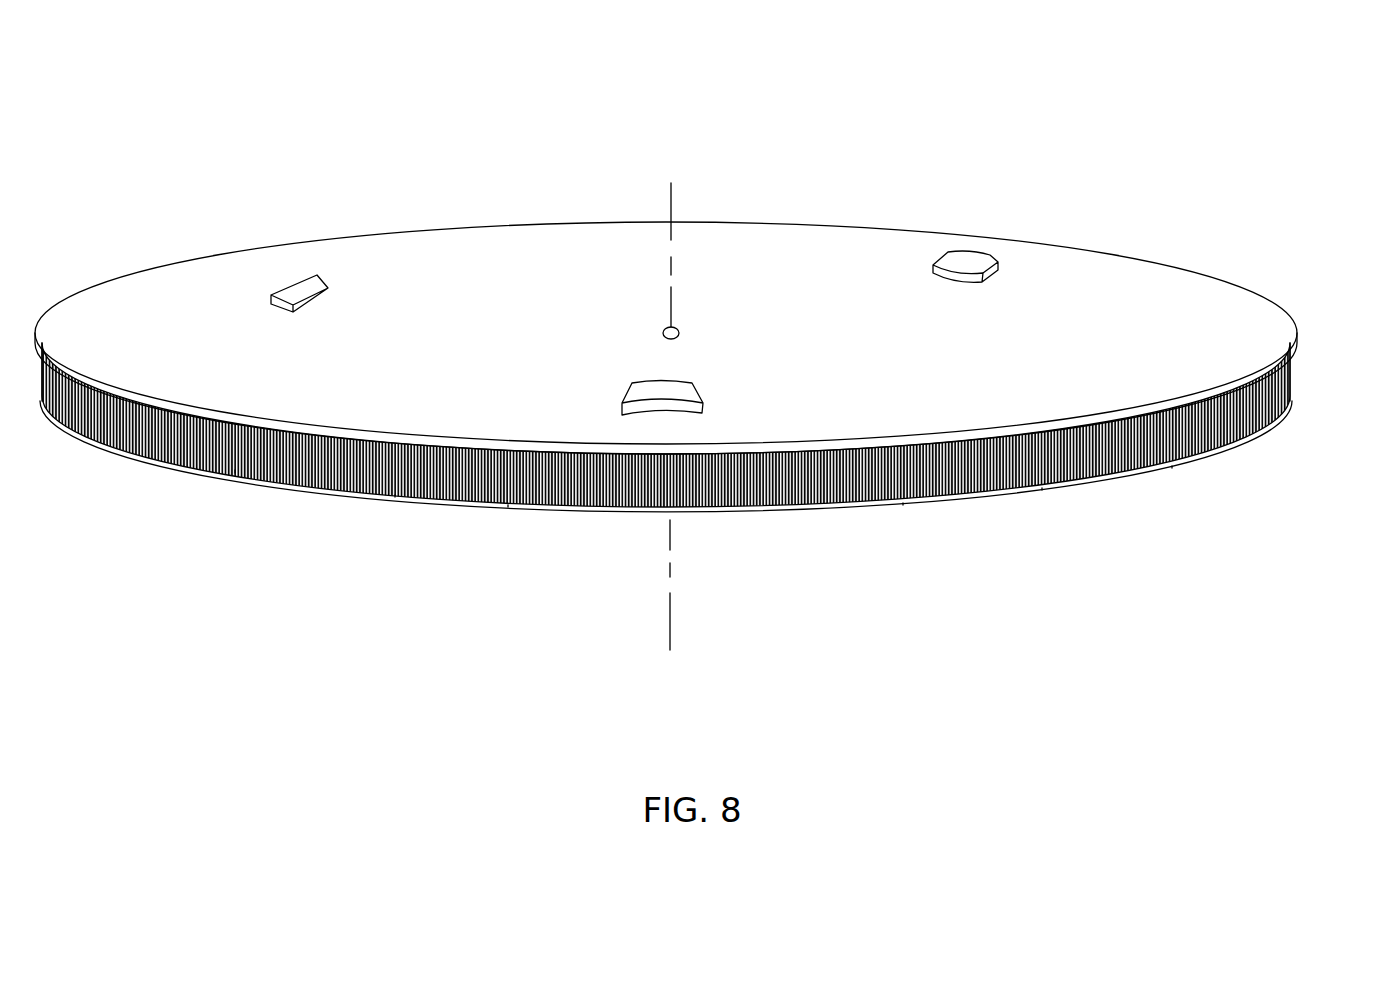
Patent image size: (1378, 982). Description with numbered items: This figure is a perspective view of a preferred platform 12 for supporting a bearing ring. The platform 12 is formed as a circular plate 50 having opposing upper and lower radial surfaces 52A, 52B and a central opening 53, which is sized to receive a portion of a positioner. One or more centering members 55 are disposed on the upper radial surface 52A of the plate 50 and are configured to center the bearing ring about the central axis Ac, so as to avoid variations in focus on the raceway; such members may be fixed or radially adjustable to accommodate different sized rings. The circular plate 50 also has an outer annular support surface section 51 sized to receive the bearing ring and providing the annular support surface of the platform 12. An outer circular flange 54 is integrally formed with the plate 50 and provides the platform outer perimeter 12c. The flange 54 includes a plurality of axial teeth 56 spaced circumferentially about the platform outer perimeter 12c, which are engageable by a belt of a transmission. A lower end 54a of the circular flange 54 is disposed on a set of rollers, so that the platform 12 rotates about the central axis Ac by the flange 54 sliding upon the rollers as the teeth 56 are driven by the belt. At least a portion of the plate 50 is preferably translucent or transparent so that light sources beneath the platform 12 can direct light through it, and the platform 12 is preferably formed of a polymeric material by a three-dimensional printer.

The platform 12 is at (350, 150).
The platform outer perimeter 12c is at (1294, 299).
The circular plate 50 is at (520, 206).
The outer annular support surface section 51 is at (222, 310).
The upper radial surface 52A is at (901, 258).
The lower radial surface 52B is at (1012, 285).
The central opening 53 is at (677, 329).
The outer circular flange 54 is at (100, 463).
The lower end of the circular flange 54a is at (773, 512).
The centering member 55 is at (305, 285).
The axial teeth 56 is at (235, 473).
The central axis Ac is at (670, 625).